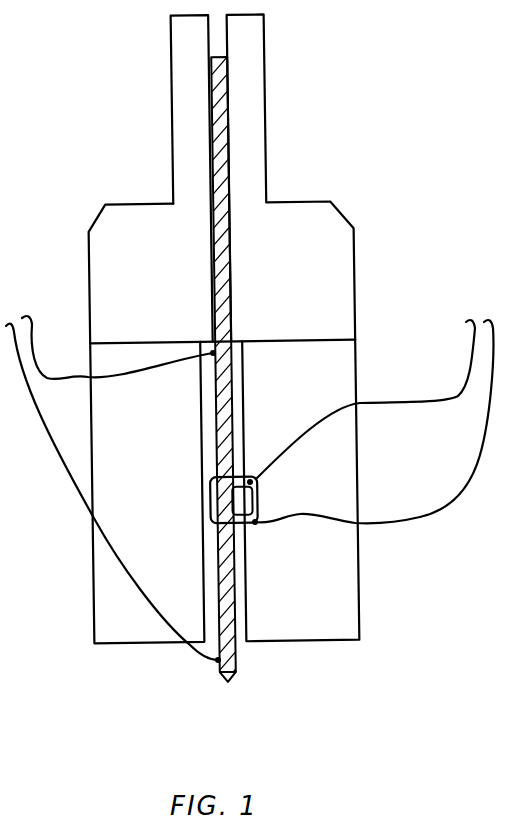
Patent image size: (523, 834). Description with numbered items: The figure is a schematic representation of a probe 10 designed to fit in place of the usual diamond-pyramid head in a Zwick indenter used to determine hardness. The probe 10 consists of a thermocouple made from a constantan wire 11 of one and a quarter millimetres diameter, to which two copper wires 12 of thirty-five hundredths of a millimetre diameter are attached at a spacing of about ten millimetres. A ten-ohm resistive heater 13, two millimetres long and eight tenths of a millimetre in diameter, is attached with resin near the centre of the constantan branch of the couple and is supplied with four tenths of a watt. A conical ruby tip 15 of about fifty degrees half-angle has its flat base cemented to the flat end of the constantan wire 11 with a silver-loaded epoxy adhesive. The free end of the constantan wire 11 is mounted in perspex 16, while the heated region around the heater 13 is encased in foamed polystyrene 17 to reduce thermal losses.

The probe 10 is at (386, 304).
The constantan wire 11 is at (222, 115).
The copper wires 12 is at (81, 375).
The resistive heater 13 is at (250, 482).
The ruby tip 15 is at (233, 678).
The perspex 16 is at (342, 214).
The foamed polystyrene 17 is at (358, 478).